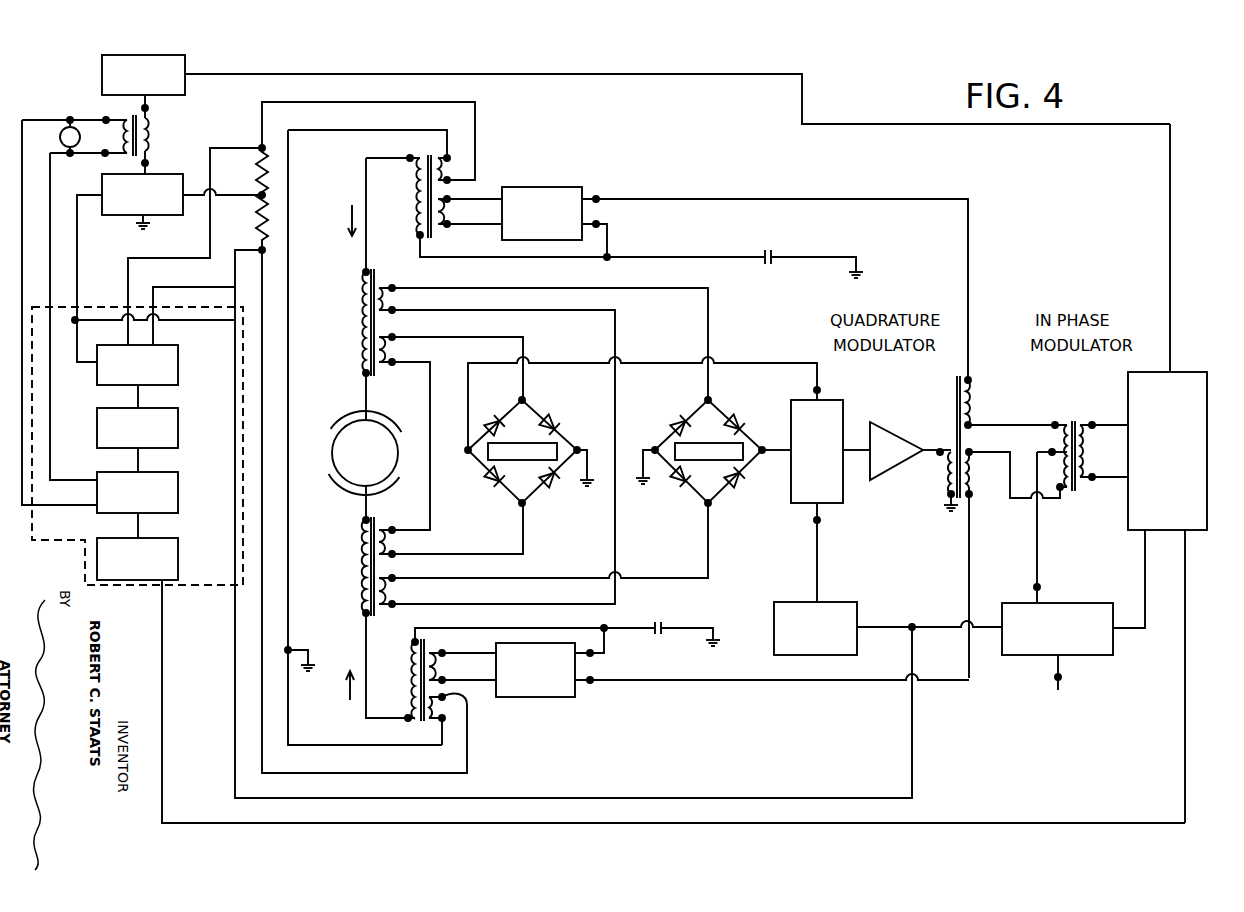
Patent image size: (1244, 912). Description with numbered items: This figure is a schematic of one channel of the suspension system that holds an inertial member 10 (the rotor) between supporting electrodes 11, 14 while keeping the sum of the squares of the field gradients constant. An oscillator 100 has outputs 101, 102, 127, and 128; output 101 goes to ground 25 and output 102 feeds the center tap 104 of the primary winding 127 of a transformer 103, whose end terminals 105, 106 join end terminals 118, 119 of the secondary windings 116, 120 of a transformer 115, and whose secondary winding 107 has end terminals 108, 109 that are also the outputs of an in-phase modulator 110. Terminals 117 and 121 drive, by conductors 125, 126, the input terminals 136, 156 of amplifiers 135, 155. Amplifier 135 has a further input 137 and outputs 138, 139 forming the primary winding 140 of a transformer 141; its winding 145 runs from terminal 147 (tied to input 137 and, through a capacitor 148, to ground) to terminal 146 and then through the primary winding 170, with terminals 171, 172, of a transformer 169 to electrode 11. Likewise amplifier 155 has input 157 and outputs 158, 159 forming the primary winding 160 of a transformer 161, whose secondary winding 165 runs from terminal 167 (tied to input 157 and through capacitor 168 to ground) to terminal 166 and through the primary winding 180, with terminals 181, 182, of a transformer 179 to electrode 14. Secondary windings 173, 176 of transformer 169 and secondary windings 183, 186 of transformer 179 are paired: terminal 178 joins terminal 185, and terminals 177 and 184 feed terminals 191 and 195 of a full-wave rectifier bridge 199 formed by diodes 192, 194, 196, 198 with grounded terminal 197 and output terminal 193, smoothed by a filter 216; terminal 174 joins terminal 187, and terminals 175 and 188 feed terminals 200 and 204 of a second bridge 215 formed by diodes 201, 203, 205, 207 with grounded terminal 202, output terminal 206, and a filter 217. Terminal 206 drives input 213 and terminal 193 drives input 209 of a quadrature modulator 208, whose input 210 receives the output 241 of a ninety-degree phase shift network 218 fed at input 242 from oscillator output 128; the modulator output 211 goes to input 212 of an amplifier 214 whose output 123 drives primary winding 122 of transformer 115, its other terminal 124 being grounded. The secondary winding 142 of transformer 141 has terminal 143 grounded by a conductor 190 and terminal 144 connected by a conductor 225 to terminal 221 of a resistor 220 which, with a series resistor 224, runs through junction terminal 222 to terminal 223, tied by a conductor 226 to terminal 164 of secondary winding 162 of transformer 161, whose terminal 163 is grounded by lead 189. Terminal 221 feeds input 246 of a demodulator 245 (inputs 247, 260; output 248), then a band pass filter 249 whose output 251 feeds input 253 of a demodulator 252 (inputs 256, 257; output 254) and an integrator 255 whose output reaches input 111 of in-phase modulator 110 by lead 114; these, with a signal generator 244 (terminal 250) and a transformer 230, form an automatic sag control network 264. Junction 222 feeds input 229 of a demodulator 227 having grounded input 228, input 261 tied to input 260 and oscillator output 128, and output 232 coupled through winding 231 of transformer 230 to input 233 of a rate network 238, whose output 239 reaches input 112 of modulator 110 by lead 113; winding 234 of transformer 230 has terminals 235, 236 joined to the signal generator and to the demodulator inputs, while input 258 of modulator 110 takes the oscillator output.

The rotor 10 is at (365, 453).
The inertial member supporting electrode 11 is at (340, 414).
The inertial member supporting electrode 14 is at (342, 490).
The ground 25 is at (144, 226).
The oscillator 100 is at (1078, 602).
The output terminal 101 is at (1061, 677).
The output terminal 102 is at (1039, 586).
The transformer 103 is at (1070, 444).
The center tap 104 is at (1048, 451).
The end terminal 105 is at (1050, 424).
The end terminal 106 is at (1062, 494).
The secondary winding 107 is at (1082, 450).
The end terminal 108 is at (1092, 421).
The end terminal 109 is at (1092, 476).
The in-phase modulator 110 is at (1167, 451).
The input 111 is at (1188, 530).
The input 112 is at (1168, 362).
The conducting lead 113 is at (770, 78).
The conductive lead 114 is at (670, 823).
The transformer 115 is at (946, 432).
The secondary winding 116 is at (970, 404).
The end terminal 117 is at (970, 380).
The end terminal 118 is at (972, 426).
The end terminal 119 is at (972, 450).
The secondary winding 120 is at (970, 469).
The end terminal 121 is at (972, 498).
The primary winding 122 is at (942, 460).
The end terminal 123 is at (934, 450).
The end terminal 124 is at (944, 496).
The conductor 125 is at (775, 275).
The conductor 126 is at (720, 680).
The primary winding 127 is at (1113, 634).
The output terminal 128 is at (990, 625).
The amplifier 135 is at (542, 187).
The input terminal 136 is at (596, 198).
The input terminal 137 is at (596, 224).
The output terminal 138 is at (449, 200).
The output terminal 139 is at (450, 226).
The primary winding 140 is at (443, 224).
The transformer 141 is at (415, 186).
The secondary winding 142 is at (458, 169).
The end terminal 143 is at (448, 156).
The end terminal 144 is at (452, 182).
The secondary winding 145 is at (418, 190).
The end terminal 146 is at (408, 158).
The end terminal 147 is at (413, 232).
The capacitor 148 is at (772, 254).
The amplifier 155 is at (550, 697).
The input terminal 156 is at (590, 680).
The input 157 is at (592, 653).
The output terminal 158 is at (462, 696).
The output terminal 159 is at (442, 652).
The primary winding 160 is at (442, 678).
The transformer 161 is at (419, 691).
The secondary winding 162 is at (442, 710).
The end terminal 163 is at (446, 736).
The end terminal 164 is at (468, 706).
The secondary winding 165 is at (408, 678).
The end terminal 166 is at (402, 718).
The end terminal 167 is at (410, 641).
The capacitor 168 is at (663, 626).
The transformer 169 is at (385, 318).
The primary winding 170 is at (362, 326).
The winding terminal 171 is at (363, 274).
The winding terminal 172 is at (362, 372).
The secondary winding 173 is at (388, 292).
The end terminal 174 is at (392, 312).
The end terminal 175 is at (394, 288).
The secondary winding 176 is at (386, 346).
The terminal 177 is at (414, 338).
The end terminal 178 is at (393, 364).
The transformer 179 is at (383, 561).
The primary winding 180 is at (358, 550).
The winding terminal 181 is at (362, 522).
The winding terminal 182 is at (354, 616).
The secondary winding 183 is at (384, 544).
The end terminal 184 is at (404, 554).
The end terminal 185 is at (404, 530).
The secondary winding 186 is at (392, 600).
The end terminal 187 is at (390, 667).
The end terminal 188 is at (392, 578).
The conducting lead 189 is at (288, 744).
The conductor 190 is at (288, 306).
The bridge terminal 191 is at (524, 398).
The diode 192 is at (492, 414).
The bridge terminal 193 is at (466, 446).
The diode 194 is at (488, 484).
The bridge terminal 195 is at (514, 504).
The diode 196 is at (541, 504).
The bridge terminal 197 is at (580, 448).
The diode 198 is at (554, 418).
The full-wave rectifier diode bridge 199 is at (522, 437).
The bridge terminal 200 is at (710, 400).
The diode 201 is at (674, 414).
The bridge terminal 202 is at (646, 446).
The diode 203 is at (676, 490).
The bridge terminal 204 is at (710, 506).
The diode 205 is at (742, 488).
The bridge terminal 206 is at (762, 450).
The diode 207 is at (738, 416).
The quadrature modulator 208 is at (822, 508).
The input 209 is at (814, 390).
The input 210 is at (814, 520).
The output 211 is at (840, 416).
The input 212 is at (864, 466).
The input 213 is at (785, 452).
The amplifier 214 is at (910, 451).
The full-wave rectifier diode bridge 215 is at (708, 437).
The filter 216 is at (510, 443).
The filter 217 is at (712, 443).
The phase shift network 218 is at (782, 602).
The resistor 220 is at (256, 162).
The terminal 221 is at (254, 148).
The junction terminal 222 is at (256, 202).
The terminal 223 is at (256, 250).
The resistor 224 is at (256, 228).
The conductor 225 is at (326, 102).
The conductor 226 is at (256, 294).
The demodulator 227 is at (124, 222).
The input terminal 228 is at (148, 222).
The input terminal 229 is at (186, 184).
The transformer 230 is at (120, 127).
The winding 231 is at (148, 138).
The output terminal 232 is at (148, 160).
The input terminal 233 is at (148, 108).
The winding 234 is at (107, 136).
The end terminal 235 is at (104, 154).
The end terminal 236 is at (102, 116).
The rate network 238 is at (102, 70).
The output 239 is at (196, 76).
The output 241 is at (818, 602).
The input 242 is at (859, 626).
The signal generator 244 is at (60, 133).
The demodulator 245 is at (178, 378).
The input 246 is at (124, 336).
The input 247 is at (156, 342).
The output 248 is at (136, 388).
The band pass filter 249 is at (94, 434).
The terminal 250 is at (68, 120).
The output 251 is at (134, 449).
The demodulator 252 is at (178, 492).
The input 253 is at (64, 166).
The output 254 is at (136, 518).
The integrator 255 is at (178, 560).
The input 256 is at (88, 480).
The input terminal 257 is at (92, 514).
The input terminal 258 is at (1140, 540).
The input 260 is at (94, 366).
The input 261 is at (100, 206).
The automatic sag control network 264 is at (137, 446).